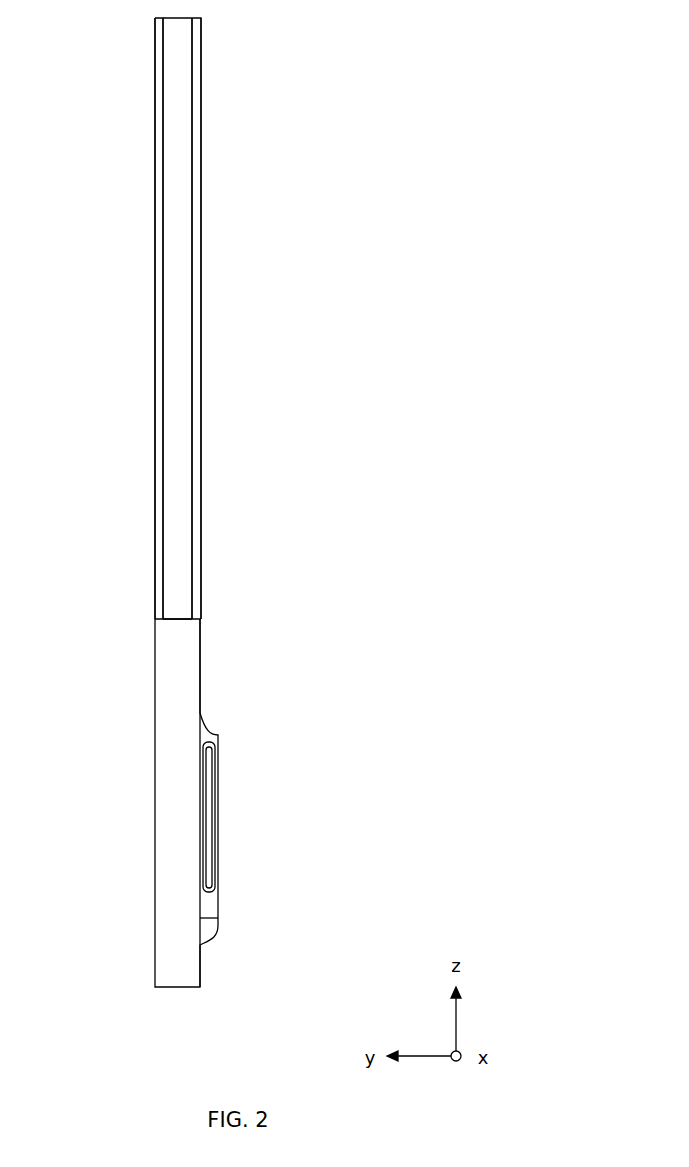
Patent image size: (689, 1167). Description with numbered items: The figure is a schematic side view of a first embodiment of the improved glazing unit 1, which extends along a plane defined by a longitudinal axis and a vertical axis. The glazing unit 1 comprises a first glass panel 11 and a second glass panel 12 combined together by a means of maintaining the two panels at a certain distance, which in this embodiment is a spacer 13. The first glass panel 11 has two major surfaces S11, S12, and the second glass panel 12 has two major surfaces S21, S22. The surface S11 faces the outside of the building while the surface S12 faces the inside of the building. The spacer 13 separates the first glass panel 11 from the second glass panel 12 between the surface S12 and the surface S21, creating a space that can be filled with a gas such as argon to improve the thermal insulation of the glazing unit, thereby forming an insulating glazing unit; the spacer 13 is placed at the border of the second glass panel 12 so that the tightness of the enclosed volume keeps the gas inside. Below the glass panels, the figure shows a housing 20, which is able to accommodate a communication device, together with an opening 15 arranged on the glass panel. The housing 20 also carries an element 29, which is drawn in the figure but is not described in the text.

The glazing unit 1 is at (307, 502).
The first glass panel 11 is at (97, 318).
The second glass panel 12 is at (267, 318).
The spacer 13 is at (177, 303).
The opening 15 is at (201, 619).
The housing 20 is at (257, 803).
The operation button 29 is at (213, 790).
The surface of first glass panel S11 is at (155, 363).
The surface of first glass panel S12 is at (162, 411).
The surface of second glass panel S21 is at (192, 373).
The surface of second glass panel S22 is at (200, 410).